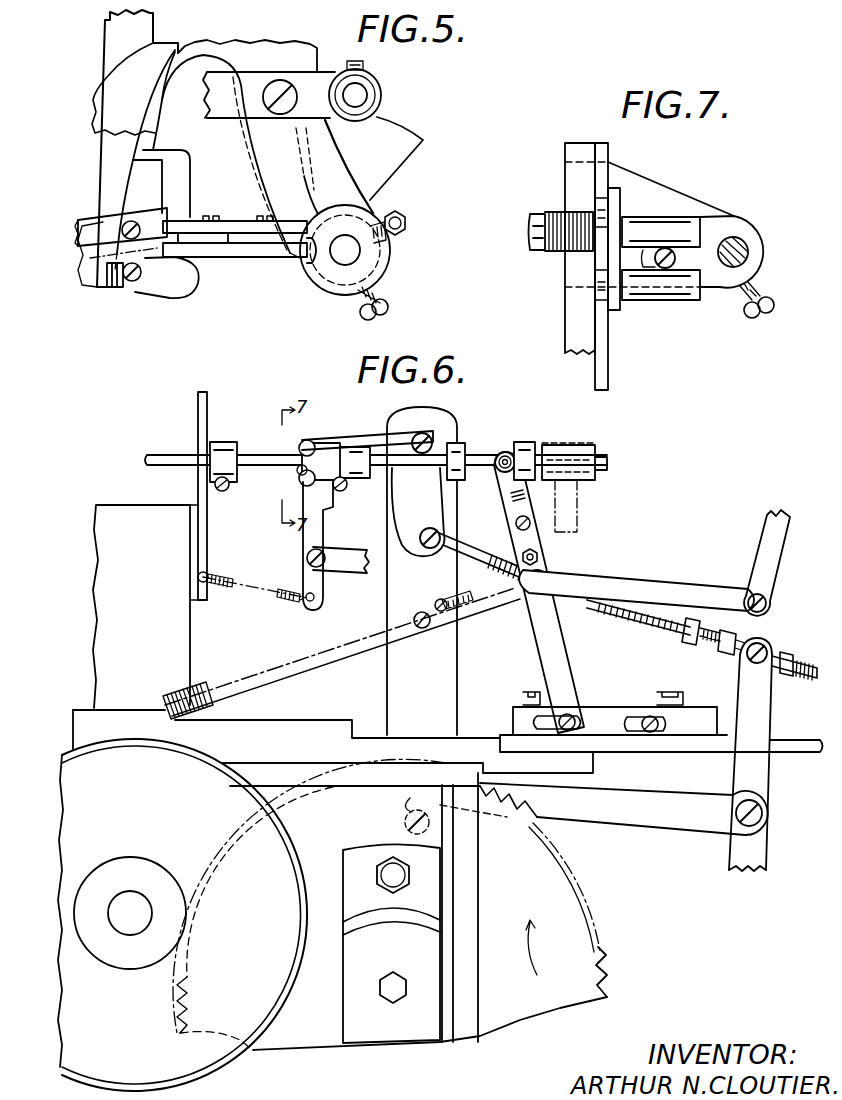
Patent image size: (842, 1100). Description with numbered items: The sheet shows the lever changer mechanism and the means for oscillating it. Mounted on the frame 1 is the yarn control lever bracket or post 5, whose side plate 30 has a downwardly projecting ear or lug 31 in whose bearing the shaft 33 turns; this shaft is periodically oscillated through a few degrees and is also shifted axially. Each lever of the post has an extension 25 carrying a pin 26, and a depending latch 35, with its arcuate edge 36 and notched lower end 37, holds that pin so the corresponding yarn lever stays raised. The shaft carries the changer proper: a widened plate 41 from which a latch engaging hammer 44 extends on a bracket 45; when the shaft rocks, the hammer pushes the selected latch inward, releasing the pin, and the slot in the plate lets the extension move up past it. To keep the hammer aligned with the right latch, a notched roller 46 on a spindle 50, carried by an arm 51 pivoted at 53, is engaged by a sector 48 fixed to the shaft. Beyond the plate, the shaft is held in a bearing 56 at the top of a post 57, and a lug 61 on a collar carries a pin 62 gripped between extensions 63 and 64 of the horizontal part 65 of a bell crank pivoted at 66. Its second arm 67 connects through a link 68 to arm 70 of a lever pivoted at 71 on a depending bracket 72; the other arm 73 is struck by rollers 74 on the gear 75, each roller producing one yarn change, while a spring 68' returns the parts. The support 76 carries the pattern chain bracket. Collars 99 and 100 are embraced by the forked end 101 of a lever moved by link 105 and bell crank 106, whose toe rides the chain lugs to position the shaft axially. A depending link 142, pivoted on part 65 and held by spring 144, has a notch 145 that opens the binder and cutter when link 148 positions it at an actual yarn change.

In FIG. 6, the frame 1 is at (478, 995).
In FIG. 6, the yarn control lever bracket or post 5 is at (141, 606).
In FIG. 5, the extension 25 is at (184, 289).
In FIG. 5, the pin 26 is at (140, 276).
In FIG. 6, the plate 30 is at (207, 418).
In FIG. 5, the ear or lug 31 is at (300, 258).
In FIG. 5, the shaft 33 is at (340, 257).
In FIG. 7, the shaft 33 is at (752, 258).
In FIG. 6, the shaft 33 is at (172, 456).
In FIG. 5, the latch 35 is at (125, 38).
In FIG. 5, the arcuate or curved edge 36 is at (126, 191).
In FIG. 5, the notched lower end 37 is at (120, 290).
In FIG. 5, the widened plate 41 is at (219, 257).
In FIG. 5, the latch engaging hammer 44 is at (158, 152).
In FIG. 5, the bracket 45 is at (242, 231).
In FIG. 5, the roller 46 is at (379, 82).
In FIG. 5, the sector 48 is at (395, 167).
In FIG. 5, the spindle 50 is at (367, 97).
In FIG. 5, the arm 51 is at (274, 72).
In FIG. 5, the pivot 53 is at (289, 97).
In FIG. 7, the bearing 56 is at (628, 180).
In FIG. 6, the bearing 56 is at (456, 482).
In FIG. 7, the post 57 is at (595, 146).
In FIG. 6, the post 57 is at (422, 571).
In FIG. 7, the ear or lug 61 is at (720, 215).
In FIG. 7, the pin 62 is at (676, 260).
In FIG. 6, the pin 62 is at (270, 472).
In FIG. 7, the extension 63 is at (650, 225).
In FIG. 6, the extension 63 is at (308, 436).
In FIG. 7, the extension 64 is at (665, 290).
In FIG. 6, the extension 64 is at (303, 478).
In FIG. 7, the horizontally disposed part of bell crank lever 65 is at (614, 214).
In FIG. 6, the horizontally disposed part of bell crank lever 65 is at (374, 437).
In FIG. 6, the pivot 66 is at (428, 437).
In FIG. 6, the second arm 67 is at (418, 512).
In FIG. 6, the link 68 is at (488, 556).
In FIG. 6, the spring 68' is at (666, 627).
In FIG. 6, the arm 70 is at (768, 691).
In FIG. 6, the pivot 71 is at (762, 818).
In FIG. 6, the depending bracket 72 is at (768, 853).
In FIG. 6, the second arm 73 is at (604, 809).
In FIG. 6, the roller 74 is at (403, 822).
In FIG. 6, the 104 tooth gear 75 is at (608, 950).
In FIG. 6, the extending support 76 is at (815, 740).
In FIG. 6, the collar 99 is at (498, 447).
In FIG. 6, the collar 100 is at (524, 440).
In FIG. 6, the forked end 101 is at (540, 546).
In FIG. 6, the link 105 is at (642, 591).
In FIG. 6, the bell crank 106 is at (772, 568).
In FIG. 7, the depending link 142 is at (606, 368).
In FIG. 6, the depending link 142 is at (312, 577).
In FIG. 6, the spring 144 is at (216, 586).
In FIG. 6, the notch 145 is at (321, 541).
In FIG. 6, the link 148 is at (345, 571).